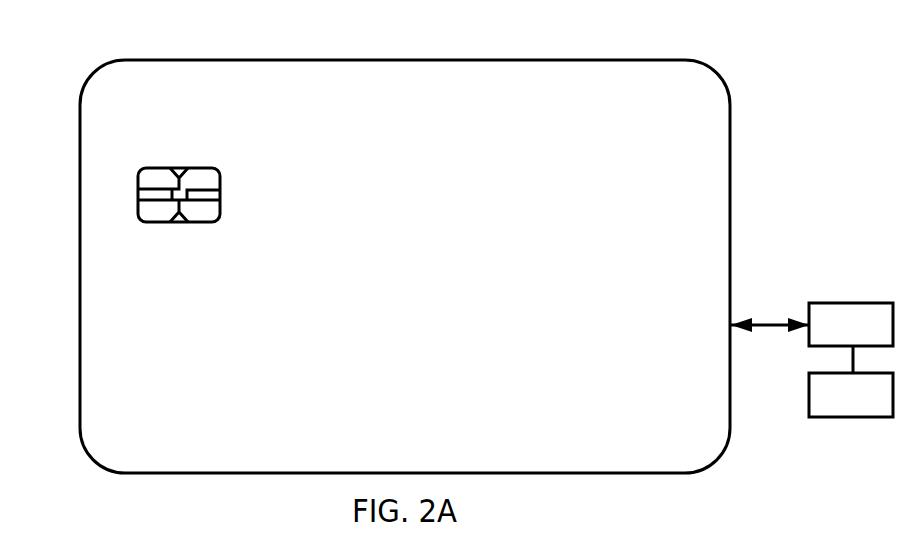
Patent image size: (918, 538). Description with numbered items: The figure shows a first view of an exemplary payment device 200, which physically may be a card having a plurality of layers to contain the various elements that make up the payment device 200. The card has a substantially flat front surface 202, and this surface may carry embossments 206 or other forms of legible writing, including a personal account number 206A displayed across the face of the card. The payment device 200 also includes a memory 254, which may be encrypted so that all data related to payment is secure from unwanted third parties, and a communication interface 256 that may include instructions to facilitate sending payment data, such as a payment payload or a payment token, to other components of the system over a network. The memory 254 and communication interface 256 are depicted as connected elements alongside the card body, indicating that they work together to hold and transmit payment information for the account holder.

The payment device 200 is at (187, 60).
The front surface 202 is at (710, 178).
The personal account number (PAN) 206A is at (98, 314).
The embossments 206 is at (483, 427).
The memory 254 is at (812, 324).
The communication interface 256 is at (851, 381).